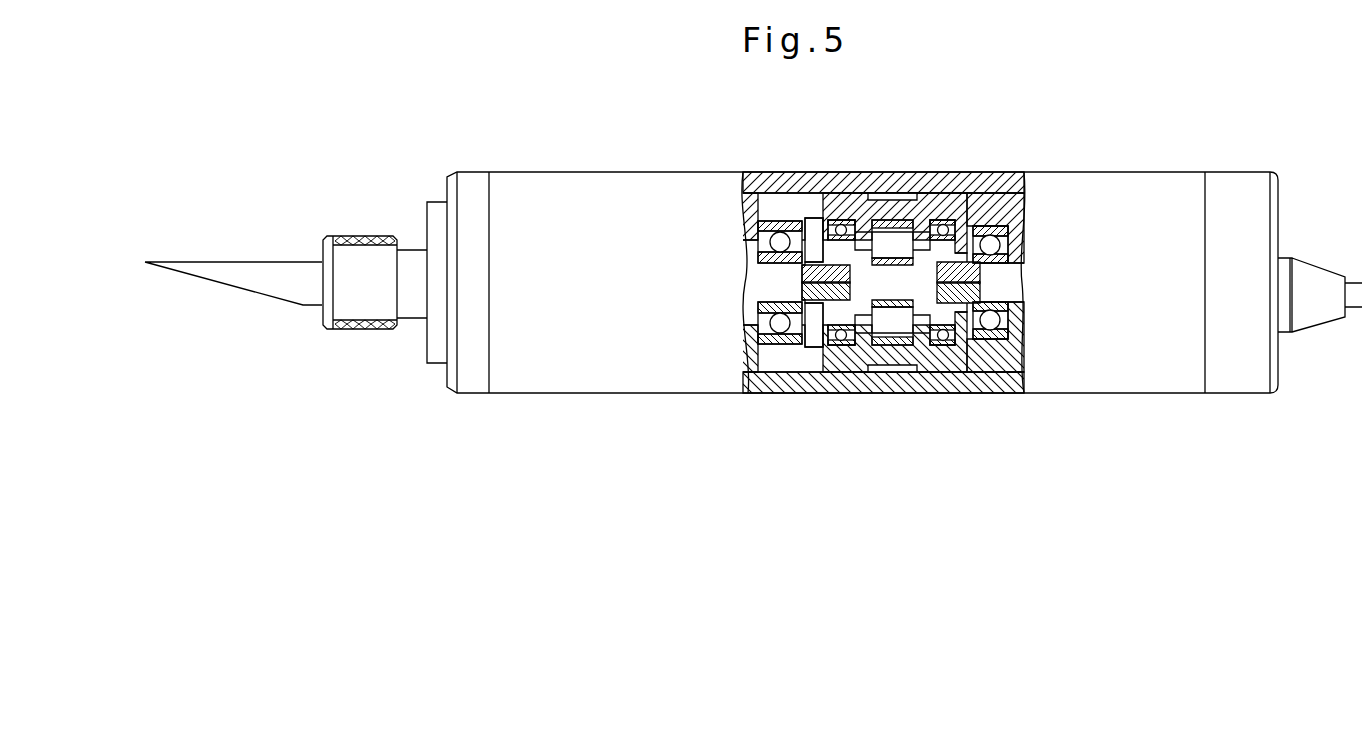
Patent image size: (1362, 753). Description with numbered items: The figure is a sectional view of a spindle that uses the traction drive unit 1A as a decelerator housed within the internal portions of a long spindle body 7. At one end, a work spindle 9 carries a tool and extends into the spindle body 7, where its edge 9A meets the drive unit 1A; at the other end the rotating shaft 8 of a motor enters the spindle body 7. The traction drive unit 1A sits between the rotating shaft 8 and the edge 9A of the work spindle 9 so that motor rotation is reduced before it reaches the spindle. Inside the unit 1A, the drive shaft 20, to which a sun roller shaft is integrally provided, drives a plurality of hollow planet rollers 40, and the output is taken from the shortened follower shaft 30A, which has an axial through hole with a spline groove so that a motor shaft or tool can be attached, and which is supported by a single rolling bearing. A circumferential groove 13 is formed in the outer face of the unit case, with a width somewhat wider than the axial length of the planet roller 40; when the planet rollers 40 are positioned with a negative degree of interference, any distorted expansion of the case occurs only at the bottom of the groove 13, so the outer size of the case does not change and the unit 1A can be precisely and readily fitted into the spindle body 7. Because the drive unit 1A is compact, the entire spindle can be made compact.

The spindle body 7 is at (983, 173).
The work spindle 9 is at (302, 293).
The edge of work spindle 9A is at (760, 277).
The follower shaft 30A is at (807, 242).
The planet roller 40 is at (925, 215).
The circumferential groove 13 is at (884, 222).
The drive shaft 20 is at (923, 300).
The rotating shaft of motor 8 is at (990, 290).
The traction drive unit 1A is at (867, 178).